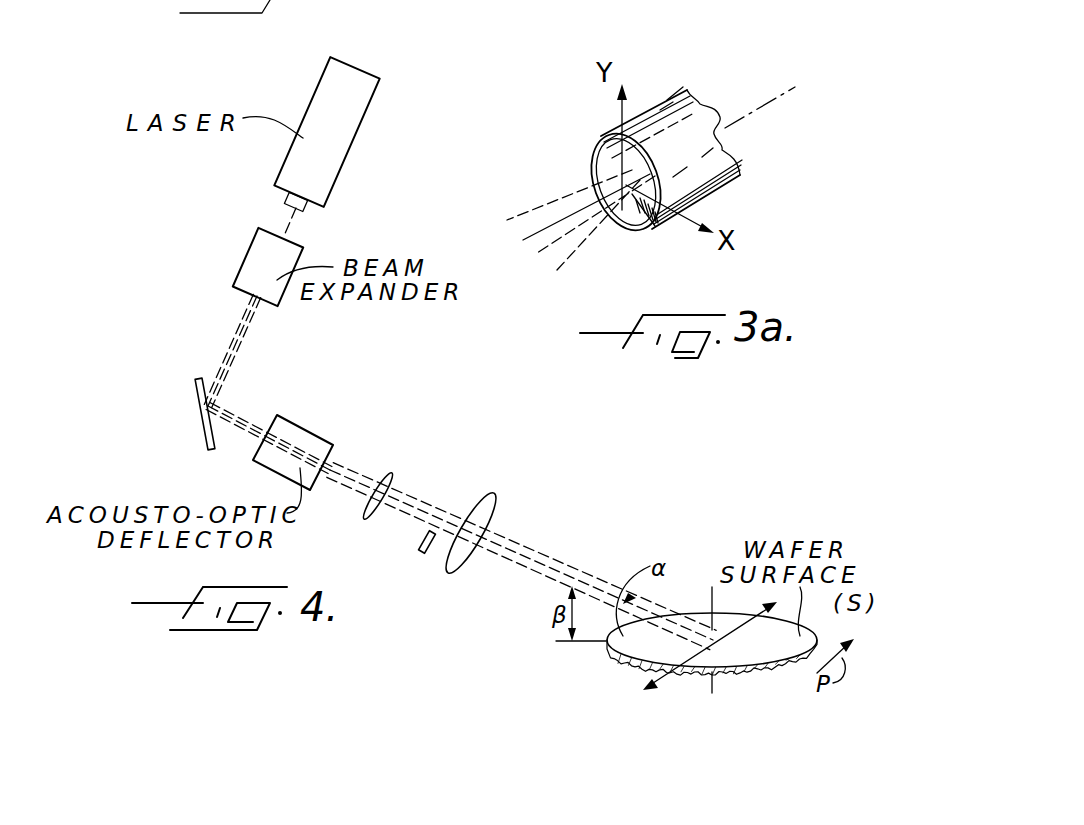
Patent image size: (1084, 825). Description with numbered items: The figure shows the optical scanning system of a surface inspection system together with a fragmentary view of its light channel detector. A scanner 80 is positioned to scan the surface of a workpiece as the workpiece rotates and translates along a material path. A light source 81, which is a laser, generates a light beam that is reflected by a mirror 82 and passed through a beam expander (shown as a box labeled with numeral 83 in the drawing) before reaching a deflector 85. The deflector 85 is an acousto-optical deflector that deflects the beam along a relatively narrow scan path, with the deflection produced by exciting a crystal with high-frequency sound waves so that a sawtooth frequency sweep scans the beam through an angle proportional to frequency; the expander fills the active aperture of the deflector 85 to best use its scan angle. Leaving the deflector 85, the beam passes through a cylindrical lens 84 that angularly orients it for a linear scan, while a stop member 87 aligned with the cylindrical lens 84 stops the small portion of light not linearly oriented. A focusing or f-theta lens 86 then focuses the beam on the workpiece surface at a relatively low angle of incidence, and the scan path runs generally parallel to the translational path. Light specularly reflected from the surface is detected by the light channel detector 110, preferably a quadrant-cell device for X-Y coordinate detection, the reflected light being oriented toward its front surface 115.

In FIG. 4, the scanner 80 is at (468, 332).
In FIG. 4, the light source 81 is at (332, 158).
In FIG. 4, the mirror 82 is at (196, 412).
In FIG. 4, the beam expander 83 is at (255, 250).
In FIG. 4, the cylindrical lens 84 is at (387, 473).
In FIG. 4, the acousto-optical deflector 85 is at (293, 437).
In FIG. 4, the focusing lens 86 is at (483, 507).
In FIG. 4, the stop member 87 is at (417, 543).
In FIG. 3A, the light channel detector 110 is at (687, 110).
In FIG. 3A, the front surface 115 is at (642, 227).